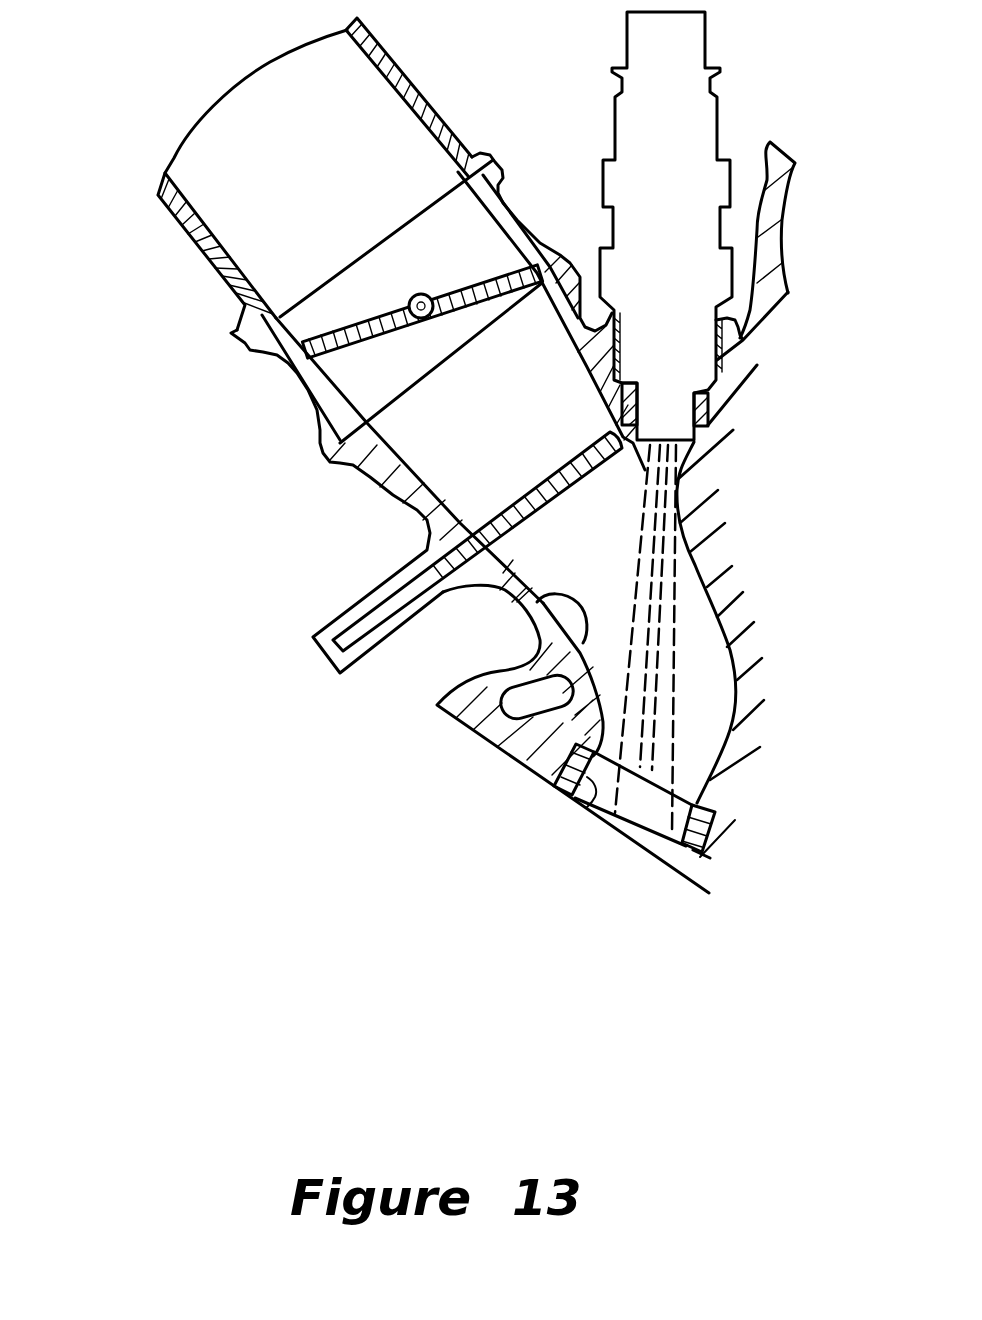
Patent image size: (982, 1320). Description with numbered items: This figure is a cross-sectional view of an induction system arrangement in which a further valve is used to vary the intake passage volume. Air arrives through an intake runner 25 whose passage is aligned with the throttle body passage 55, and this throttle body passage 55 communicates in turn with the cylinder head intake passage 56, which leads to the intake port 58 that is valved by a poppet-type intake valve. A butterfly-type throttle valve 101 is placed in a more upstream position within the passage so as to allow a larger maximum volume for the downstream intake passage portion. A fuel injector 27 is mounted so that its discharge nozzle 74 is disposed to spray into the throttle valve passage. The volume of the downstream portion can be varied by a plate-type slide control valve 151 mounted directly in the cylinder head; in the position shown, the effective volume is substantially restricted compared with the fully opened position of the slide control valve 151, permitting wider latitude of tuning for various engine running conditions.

The intake runner 25 is at (268, 187).
The fuel injector 27 is at (732, 226).
The throttle body passage 55 is at (415, 413).
The cylinder head intake passage 56 is at (539, 726).
The intake port 58 is at (632, 837).
The discharge nozzle 74 is at (722, 608).
The butterfly-type throttle valve 101 is at (413, 264).
The plate-type slide control valve 151 is at (428, 541).